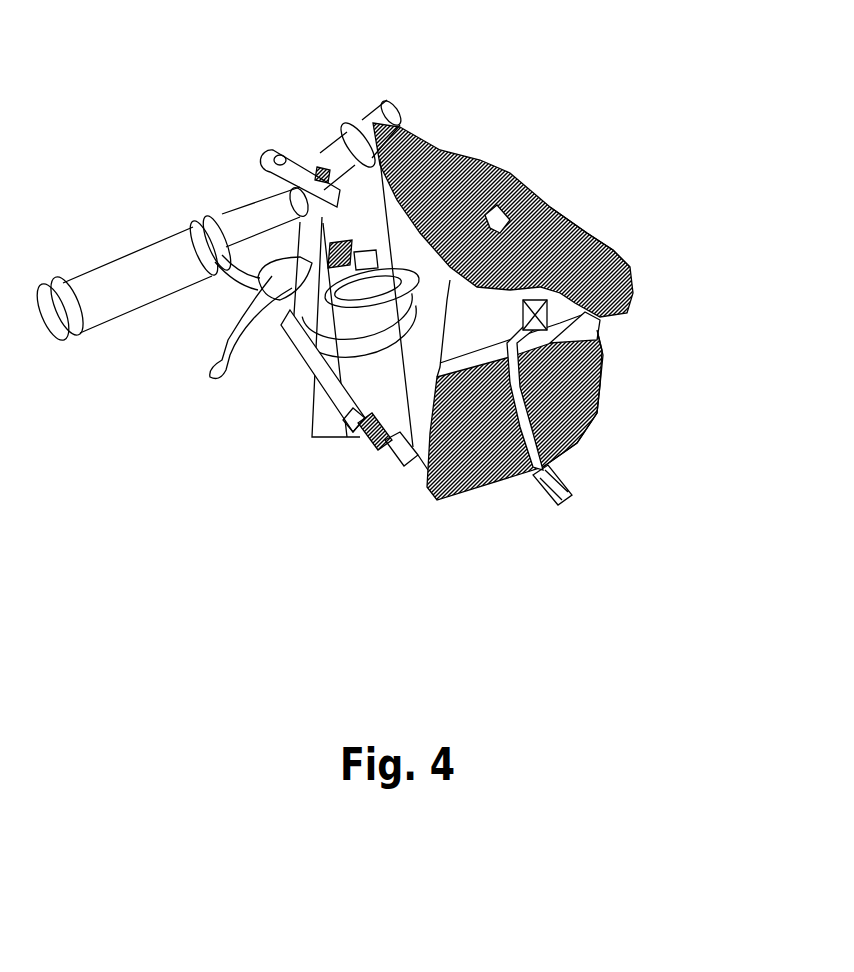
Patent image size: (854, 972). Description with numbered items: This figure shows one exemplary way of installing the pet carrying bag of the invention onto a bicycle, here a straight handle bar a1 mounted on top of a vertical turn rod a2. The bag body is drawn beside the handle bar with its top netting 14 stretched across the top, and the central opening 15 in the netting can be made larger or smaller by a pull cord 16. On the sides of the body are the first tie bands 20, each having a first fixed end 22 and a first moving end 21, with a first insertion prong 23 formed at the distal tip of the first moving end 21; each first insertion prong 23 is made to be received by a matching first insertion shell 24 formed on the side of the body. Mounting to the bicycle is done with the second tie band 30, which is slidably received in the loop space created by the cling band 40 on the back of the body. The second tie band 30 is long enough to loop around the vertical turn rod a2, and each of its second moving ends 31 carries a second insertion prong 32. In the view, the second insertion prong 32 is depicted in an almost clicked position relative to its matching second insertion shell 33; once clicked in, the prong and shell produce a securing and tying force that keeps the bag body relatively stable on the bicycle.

The handle bar a1 is at (257, 220).
The vertical turn rod a2 is at (316, 316).
The cling band 40 is at (343, 147).
The top netting 14 is at (463, 152).
The central opening 15 is at (513, 170).
The pull cord 16 is at (563, 217).
The first tie band 20 is at (490, 483).
The first moving end 21 is at (533, 478).
The first fixed end 22 is at (637, 283).
The first insertion prong 23 is at (557, 497).
The first insertion shell 24 is at (603, 357).
The second tie band 30 is at (310, 375).
The second moving end 31 is at (347, 436).
The second insertion prong 32 is at (372, 442).
The second insertion shell 33 is at (406, 462).